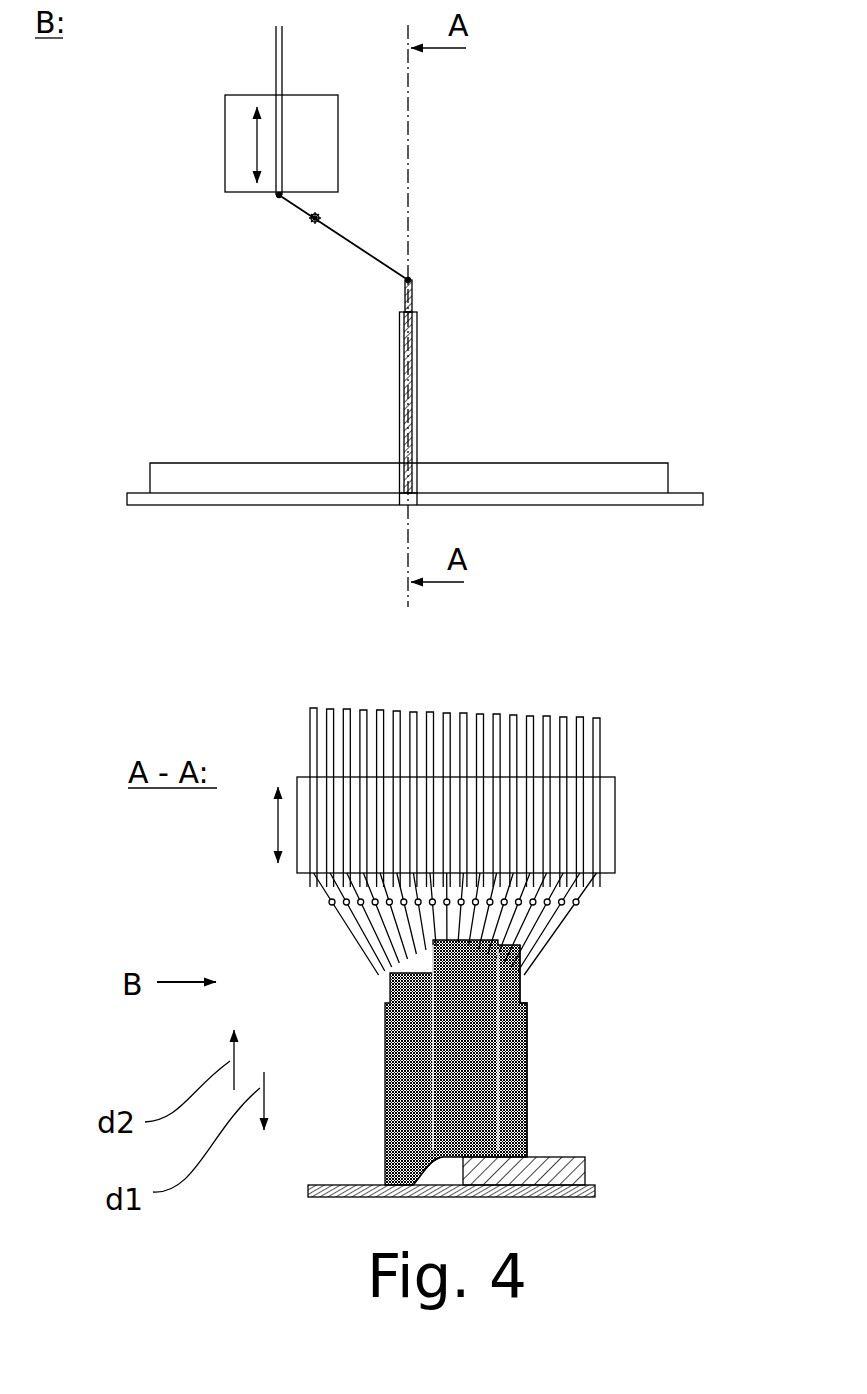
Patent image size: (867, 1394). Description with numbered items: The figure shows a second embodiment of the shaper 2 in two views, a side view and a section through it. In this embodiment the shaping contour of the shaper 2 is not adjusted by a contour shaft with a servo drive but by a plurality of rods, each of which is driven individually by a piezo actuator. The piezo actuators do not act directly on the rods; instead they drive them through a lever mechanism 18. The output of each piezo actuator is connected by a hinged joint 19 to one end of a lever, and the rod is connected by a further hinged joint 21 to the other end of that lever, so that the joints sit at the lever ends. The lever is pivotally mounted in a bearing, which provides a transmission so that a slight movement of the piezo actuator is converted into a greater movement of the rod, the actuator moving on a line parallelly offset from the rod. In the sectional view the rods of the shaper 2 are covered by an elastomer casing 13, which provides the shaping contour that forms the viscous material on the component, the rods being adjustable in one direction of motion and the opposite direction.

The shaper 2 is at (423, 350).
The casing 13 is at (529, 1050).
The lever mechanism 18 is at (351, 211).
The hinged joint 19 is at (277, 197).
The hinged joint 21 is at (410, 280).